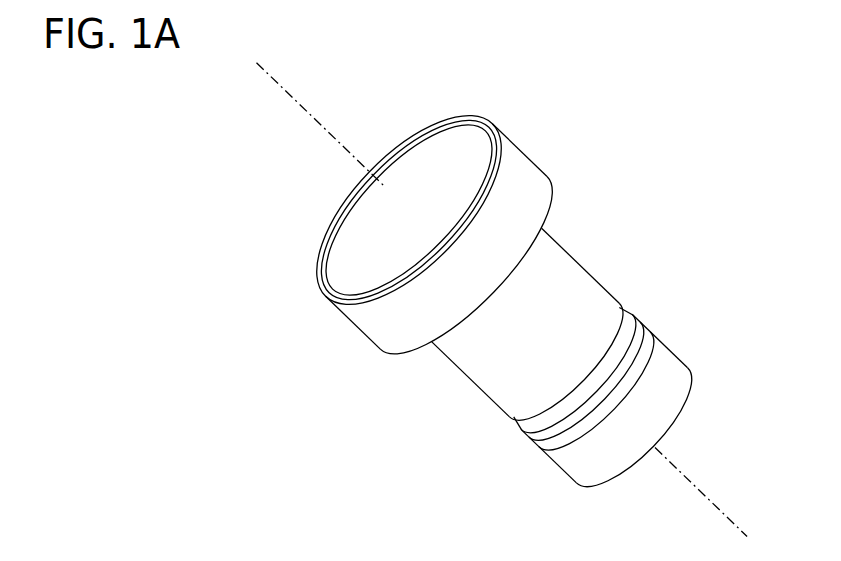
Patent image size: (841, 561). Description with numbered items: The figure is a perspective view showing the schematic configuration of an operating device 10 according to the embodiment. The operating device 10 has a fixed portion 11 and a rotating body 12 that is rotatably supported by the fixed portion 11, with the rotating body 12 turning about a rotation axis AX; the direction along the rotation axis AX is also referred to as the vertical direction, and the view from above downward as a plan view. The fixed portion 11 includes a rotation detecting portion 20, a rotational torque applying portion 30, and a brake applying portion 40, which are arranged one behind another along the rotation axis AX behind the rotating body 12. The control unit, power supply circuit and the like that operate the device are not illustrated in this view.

The operating device 10 is at (501, 293).
The fixed portion 11 is at (730, 303).
The rotating body 12 is at (513, 167).
The rotation detecting portion 20 is at (630, 317).
The rotational torque applying portion 30 is at (567, 265).
The brake applying portion 40 is at (663, 357).
The rotation axis AX is at (300, 104).